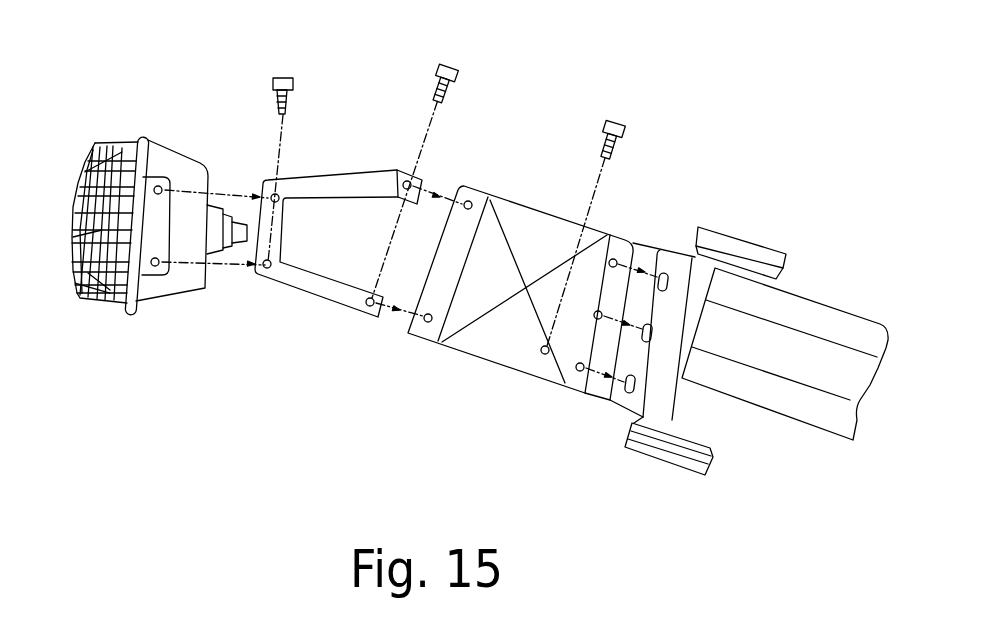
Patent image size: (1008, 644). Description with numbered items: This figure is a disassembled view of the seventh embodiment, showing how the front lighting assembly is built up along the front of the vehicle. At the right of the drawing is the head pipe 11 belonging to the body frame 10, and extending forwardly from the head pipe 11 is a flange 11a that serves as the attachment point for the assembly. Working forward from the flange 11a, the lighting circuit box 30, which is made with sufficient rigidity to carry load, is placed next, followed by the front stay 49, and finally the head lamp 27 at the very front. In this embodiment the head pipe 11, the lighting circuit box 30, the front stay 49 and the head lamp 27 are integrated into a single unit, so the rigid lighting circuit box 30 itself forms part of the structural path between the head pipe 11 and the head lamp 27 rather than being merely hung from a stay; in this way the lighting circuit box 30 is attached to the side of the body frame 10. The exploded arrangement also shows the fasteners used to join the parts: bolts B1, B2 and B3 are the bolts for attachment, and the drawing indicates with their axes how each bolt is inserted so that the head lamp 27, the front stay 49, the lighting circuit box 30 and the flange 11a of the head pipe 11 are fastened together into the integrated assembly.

The body frame 10 is at (835, 303).
The head pipe 11 is at (745, 235).
The flange 11a is at (678, 240).
The head lamp 27 is at (100, 307).
The lighting circuit box 30 is at (500, 366).
The front stay 49 is at (317, 300).
The bolt B1 is at (616, 123).
The bolt B2 is at (451, 66).
The bolt B3 is at (282, 72).